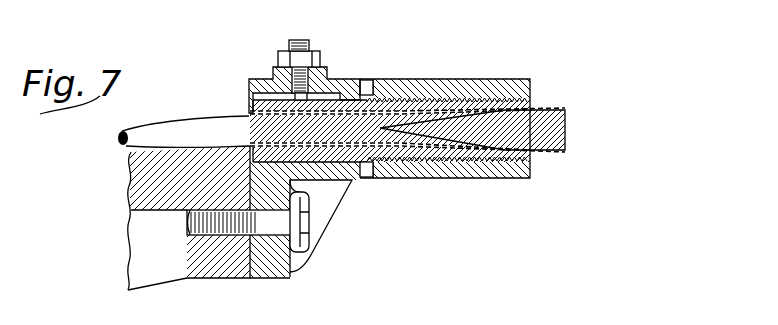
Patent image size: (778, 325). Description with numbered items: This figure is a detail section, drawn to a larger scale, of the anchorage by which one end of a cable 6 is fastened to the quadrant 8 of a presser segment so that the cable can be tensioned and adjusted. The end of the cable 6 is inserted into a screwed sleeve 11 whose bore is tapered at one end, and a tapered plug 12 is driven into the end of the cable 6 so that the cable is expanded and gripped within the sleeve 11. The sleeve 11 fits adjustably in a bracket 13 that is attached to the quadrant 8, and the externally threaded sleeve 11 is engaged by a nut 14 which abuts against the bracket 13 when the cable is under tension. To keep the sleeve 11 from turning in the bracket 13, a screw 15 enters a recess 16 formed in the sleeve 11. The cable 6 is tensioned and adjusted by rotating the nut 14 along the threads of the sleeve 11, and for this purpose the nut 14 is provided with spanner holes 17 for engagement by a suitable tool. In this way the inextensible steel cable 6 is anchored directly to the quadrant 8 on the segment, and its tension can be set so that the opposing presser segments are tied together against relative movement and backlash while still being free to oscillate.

The cable 6 is at (183, 130).
The quadrant 8 is at (133, 197).
The screwed sleeve 11 is at (428, 100).
The tapered plug 12 is at (562, 132).
The bracket 13 is at (323, 180).
The nut 14 is at (490, 80).
The screw 15 is at (297, 39).
The recess 16 is at (262, 80).
The spanner holes 17 is at (367, 79).